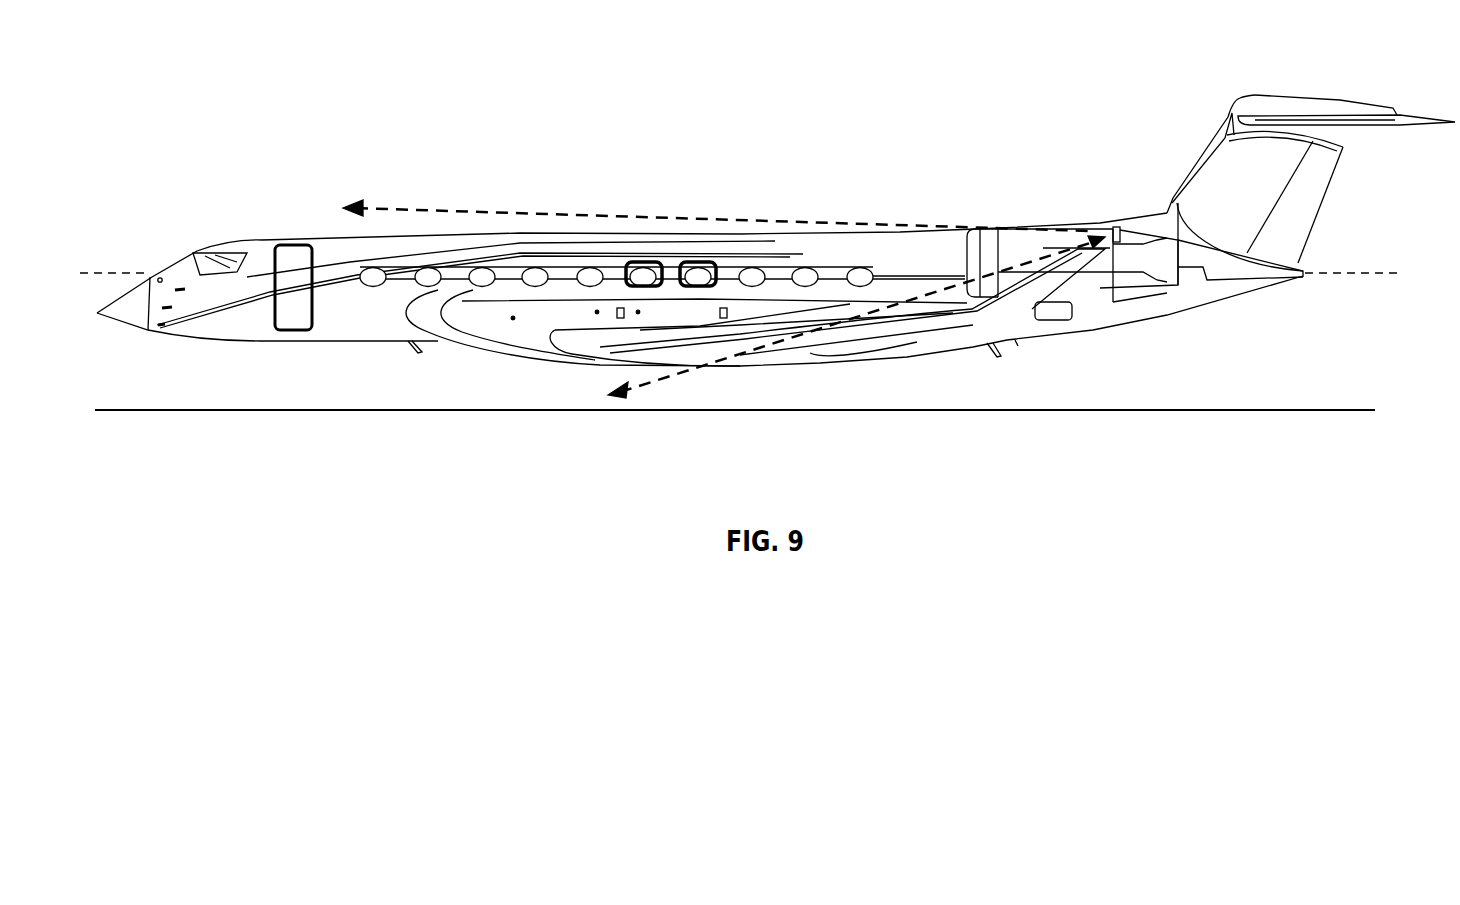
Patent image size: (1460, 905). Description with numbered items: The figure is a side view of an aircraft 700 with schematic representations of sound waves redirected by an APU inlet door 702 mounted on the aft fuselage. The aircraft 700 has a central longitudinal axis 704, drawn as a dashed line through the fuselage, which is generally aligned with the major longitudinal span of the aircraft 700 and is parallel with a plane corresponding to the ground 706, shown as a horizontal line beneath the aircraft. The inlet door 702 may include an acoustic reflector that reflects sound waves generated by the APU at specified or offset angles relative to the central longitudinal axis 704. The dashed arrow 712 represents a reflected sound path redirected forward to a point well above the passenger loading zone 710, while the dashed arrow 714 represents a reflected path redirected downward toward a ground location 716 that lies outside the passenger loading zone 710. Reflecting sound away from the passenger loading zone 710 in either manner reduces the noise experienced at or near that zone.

The aircraft 700 is at (355, 356).
The APU inlet door 702 is at (1116, 226).
The central longitudinal axis 704 is at (105, 272).
The ground 706 is at (1210, 412).
The passenger loading zone 710 is at (270, 396).
The dashed arrow 712 is at (512, 208).
The dashed arrow 714 is at (672, 378).
The ground location 716 is at (587, 411).